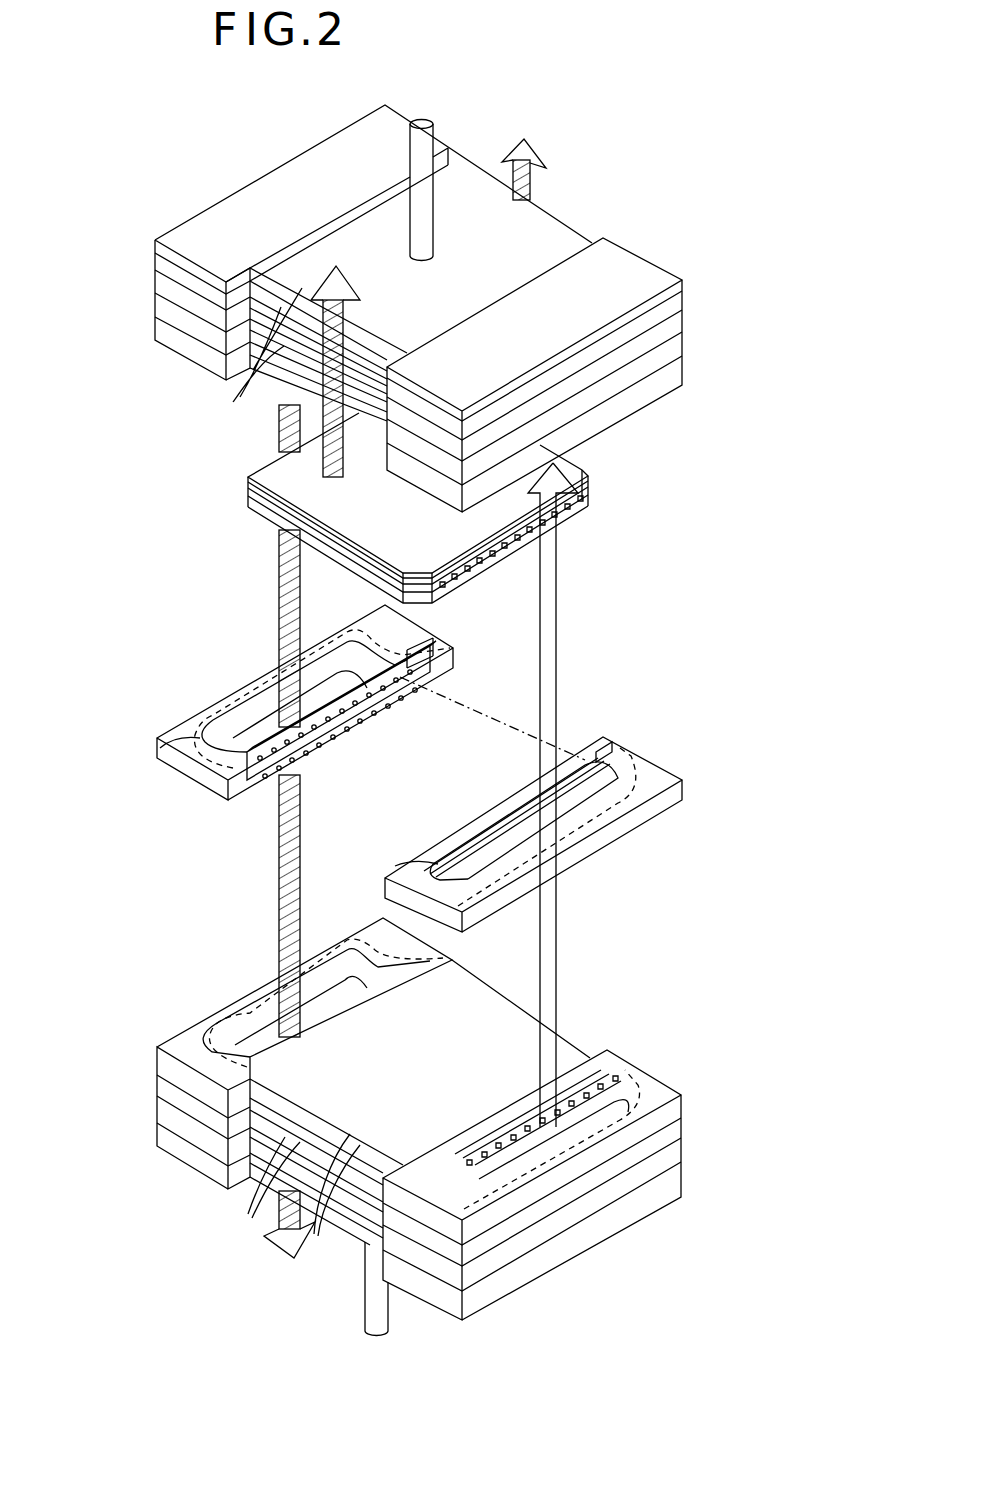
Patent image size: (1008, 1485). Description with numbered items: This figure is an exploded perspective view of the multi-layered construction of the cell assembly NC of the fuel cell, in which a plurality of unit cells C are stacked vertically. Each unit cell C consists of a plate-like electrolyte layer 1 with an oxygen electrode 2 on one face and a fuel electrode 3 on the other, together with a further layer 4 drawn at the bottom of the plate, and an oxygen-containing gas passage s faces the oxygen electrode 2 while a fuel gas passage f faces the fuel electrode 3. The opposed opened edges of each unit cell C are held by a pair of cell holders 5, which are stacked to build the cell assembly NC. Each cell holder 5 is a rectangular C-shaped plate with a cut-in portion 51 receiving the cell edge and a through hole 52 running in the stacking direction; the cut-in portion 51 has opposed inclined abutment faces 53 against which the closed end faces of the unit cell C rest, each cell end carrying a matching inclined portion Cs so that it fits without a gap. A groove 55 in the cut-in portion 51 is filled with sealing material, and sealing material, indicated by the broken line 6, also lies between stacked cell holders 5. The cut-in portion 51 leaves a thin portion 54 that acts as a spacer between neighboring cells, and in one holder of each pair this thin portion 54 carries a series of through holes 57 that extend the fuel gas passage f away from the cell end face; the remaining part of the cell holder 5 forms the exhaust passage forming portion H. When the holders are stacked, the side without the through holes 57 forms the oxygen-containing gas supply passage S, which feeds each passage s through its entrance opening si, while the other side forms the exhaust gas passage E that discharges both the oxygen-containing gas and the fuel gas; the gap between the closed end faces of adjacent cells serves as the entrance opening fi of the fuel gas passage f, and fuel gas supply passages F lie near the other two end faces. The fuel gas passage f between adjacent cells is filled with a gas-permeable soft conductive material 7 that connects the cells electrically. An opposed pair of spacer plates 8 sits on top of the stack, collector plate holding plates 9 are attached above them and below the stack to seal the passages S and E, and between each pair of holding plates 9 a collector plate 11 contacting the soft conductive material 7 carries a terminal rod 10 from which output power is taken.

The cell assembly NC is at (230, 173).
The collector plate 11 is at (570, 238).
The collector plate holding plate 9 is at (172, 225).
The spacer plate 8 is at (178, 256).
The soft conductive material 7 is at (272, 340).
The terminal rod 10 is at (436, 228).
The fuel gas supply passage F is at (358, 299).
The exhaust gas passage E is at (278, 572).
The unit cell C is at (690, 594).
The inclined portion Cs is at (260, 490).
The fuel electrode 3 is at (592, 479).
The electrolyte layer 1 is at (592, 484).
The oxygen electrode 2 is at (592, 491).
The bottom layer 4 is at (588, 500).
The oxygen-containing gas passage s is at (490, 555).
The entrance opening si is at (498, 550).
The oxygen-containing gas supply passage S is at (562, 650).
The exhaust passage forming portion H is at (160, 723).
The through hole 52 is at (262, 727).
The abutment face 53 is at (432, 672).
The cut-in portion 51 is at (405, 670).
The thin portion 54 is at (428, 680).
The through holes 57 is at (355, 738).
The groove 55 is at (397, 658).
The fuel gas passage f is at (330, 826).
The entrance opening fi is at (490, 712).
The sealing material 6 is at (412, 632).
The cell holder 5 is at (688, 354).